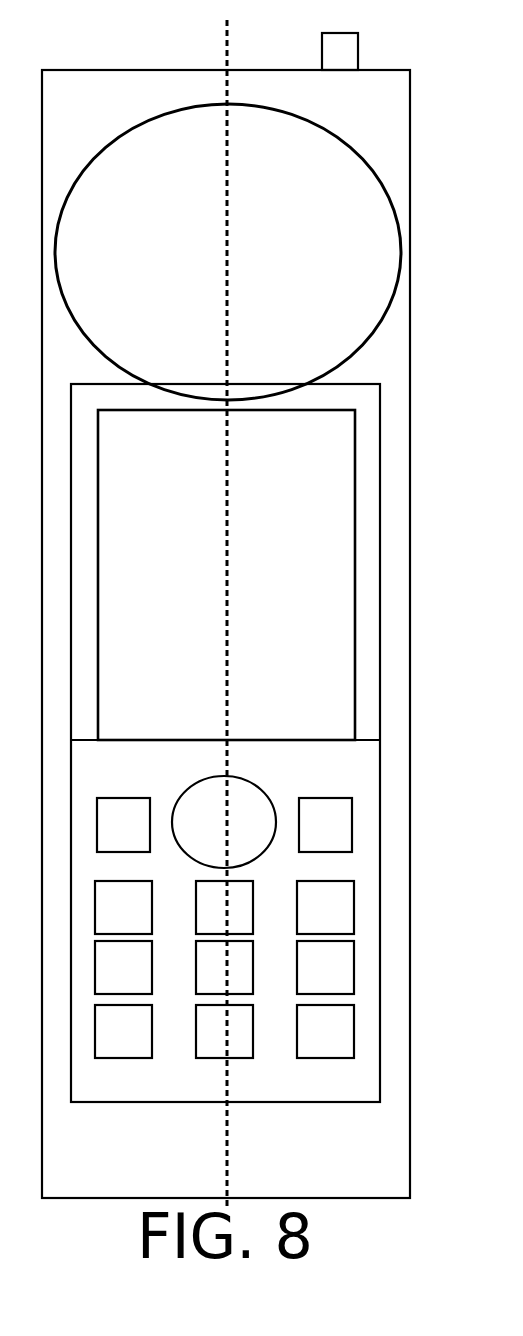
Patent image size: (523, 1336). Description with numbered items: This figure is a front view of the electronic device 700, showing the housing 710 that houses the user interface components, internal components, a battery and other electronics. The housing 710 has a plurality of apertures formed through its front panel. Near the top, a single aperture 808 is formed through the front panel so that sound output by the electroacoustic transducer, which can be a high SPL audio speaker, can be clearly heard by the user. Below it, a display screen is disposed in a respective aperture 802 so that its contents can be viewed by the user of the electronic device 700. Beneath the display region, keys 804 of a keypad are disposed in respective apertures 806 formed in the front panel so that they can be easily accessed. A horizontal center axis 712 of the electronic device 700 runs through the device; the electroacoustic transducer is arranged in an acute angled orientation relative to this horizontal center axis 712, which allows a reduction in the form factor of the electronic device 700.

The electronic device 700 is at (83, 94).
The housing 710 is at (108, 68).
The horizontal center axis 712 is at (212, 53).
The aperture 808 is at (379, 106).
The aperture 802 is at (84, 375).
The keys 804 is at (117, 815).
The apertures 806 is at (368, 770).